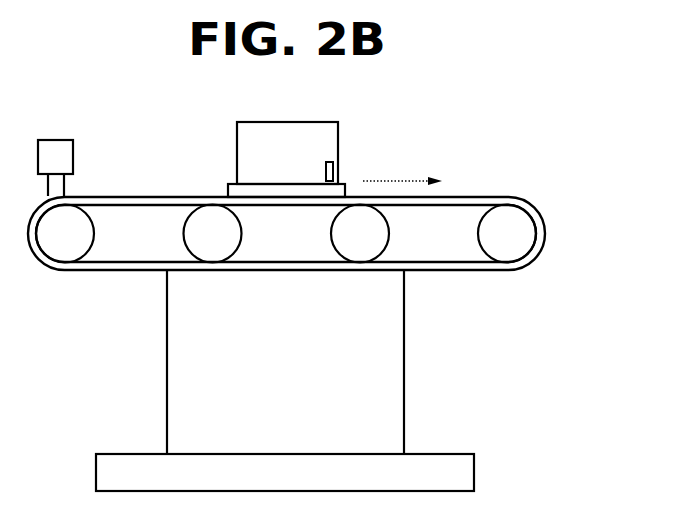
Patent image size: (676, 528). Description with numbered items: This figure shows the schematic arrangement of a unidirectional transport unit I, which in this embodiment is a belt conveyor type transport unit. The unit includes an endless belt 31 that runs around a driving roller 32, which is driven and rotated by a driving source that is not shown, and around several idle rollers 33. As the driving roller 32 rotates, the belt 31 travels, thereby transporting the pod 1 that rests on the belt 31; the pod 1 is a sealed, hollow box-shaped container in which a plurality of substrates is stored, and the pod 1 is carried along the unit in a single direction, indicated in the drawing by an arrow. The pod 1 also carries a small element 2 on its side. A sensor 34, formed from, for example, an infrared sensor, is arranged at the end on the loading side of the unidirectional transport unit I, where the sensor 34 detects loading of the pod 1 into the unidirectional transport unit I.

The unidirectional transport unit I is at (556, 77).
The pod 1 is at (357, 111).
The identification tag 2 is at (333, 172).
The belt 31 is at (474, 198).
The driving roller 32 is at (506, 252).
The idle rollers 33 is at (63, 250).
The sensor 34 is at (54, 147).